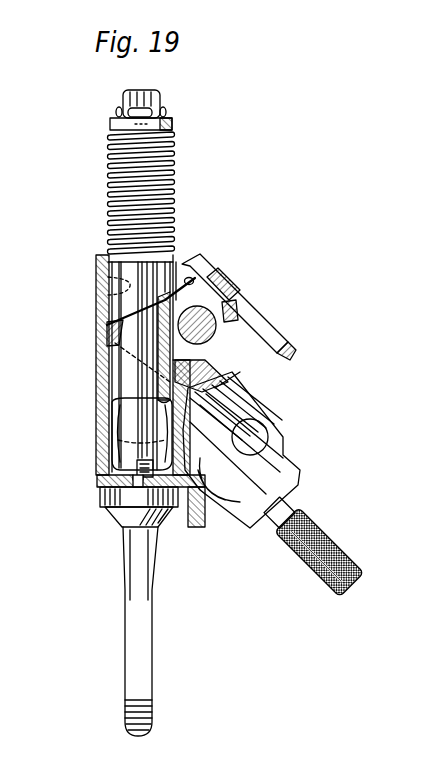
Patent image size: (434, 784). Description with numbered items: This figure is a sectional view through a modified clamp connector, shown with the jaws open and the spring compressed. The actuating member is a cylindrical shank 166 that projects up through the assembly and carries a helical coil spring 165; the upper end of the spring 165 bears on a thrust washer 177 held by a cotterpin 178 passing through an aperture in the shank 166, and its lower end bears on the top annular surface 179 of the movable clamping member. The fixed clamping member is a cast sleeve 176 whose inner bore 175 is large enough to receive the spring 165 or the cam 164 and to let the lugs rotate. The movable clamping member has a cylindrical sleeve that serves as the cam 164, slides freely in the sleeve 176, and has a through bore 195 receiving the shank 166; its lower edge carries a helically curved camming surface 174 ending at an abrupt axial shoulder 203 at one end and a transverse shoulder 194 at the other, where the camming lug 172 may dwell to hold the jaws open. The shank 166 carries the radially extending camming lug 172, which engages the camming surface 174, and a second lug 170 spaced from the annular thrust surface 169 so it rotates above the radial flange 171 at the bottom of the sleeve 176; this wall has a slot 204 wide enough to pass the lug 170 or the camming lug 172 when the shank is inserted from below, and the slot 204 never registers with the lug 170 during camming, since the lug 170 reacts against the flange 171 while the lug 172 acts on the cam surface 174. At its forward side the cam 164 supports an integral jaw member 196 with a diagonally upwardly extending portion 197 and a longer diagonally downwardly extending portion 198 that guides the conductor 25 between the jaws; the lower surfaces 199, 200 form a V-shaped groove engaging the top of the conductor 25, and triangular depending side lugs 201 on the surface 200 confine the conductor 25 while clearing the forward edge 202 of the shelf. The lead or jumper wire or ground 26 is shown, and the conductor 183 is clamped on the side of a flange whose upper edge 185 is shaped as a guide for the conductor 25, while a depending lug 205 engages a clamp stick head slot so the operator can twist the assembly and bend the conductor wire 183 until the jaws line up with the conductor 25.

The cotterpin 178 is at (152, 106).
The thrust washer 177 is at (173, 127).
The helical coil spring 165 is at (172, 197).
The top annular surface 179 is at (168, 245).
The cam 164 is at (113, 290).
The cylindrical through bore 195 is at (110, 279).
The camming surface 174 is at (108, 330).
The abrupt axial shoulder 203 is at (160, 338).
The sleeve 176 is at (103, 346).
The transverse shoulder 194 is at (152, 378).
The camming lug 172 is at (165, 410).
The cylindrical shank 166 is at (118, 410).
The bore 175 is at (140, 440).
The radially extending lug 170 is at (145, 468).
The slot 204 is at (133, 481).
The annular thrust surface 169 is at (118, 503).
The radial flange 171 is at (158, 513).
The depending lug 205 is at (195, 528).
The transmission line conductor 25 is at (206, 337).
The forward edge 202 is at (226, 370).
The surface 199 is at (205, 268).
The diagonally upwardly extending portion 197 is at (188, 262).
The jaw member 196 is at (195, 282).
The surface 200 is at (227, 273).
The diagonally downwardly extending portion 198 is at (232, 292).
The triangular depending side lugs 201 is at (252, 312).
The upper edge 185 is at (258, 412).
The conductor 183 is at (284, 520).
The lead or jumper wire 26 is at (322, 534).